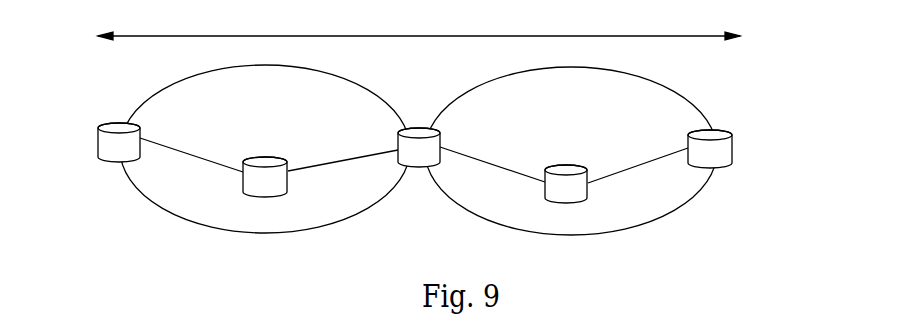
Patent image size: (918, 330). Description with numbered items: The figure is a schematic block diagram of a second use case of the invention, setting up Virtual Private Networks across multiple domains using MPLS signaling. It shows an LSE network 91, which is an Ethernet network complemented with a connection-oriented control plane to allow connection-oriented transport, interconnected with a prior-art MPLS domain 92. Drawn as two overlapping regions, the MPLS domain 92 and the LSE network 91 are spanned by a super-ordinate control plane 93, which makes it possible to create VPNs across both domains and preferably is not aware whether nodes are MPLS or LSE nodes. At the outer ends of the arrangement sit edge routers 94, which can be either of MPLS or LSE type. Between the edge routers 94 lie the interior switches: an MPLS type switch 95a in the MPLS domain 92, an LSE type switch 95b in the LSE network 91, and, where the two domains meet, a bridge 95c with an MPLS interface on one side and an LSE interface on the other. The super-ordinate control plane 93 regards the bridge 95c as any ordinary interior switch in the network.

The LSE network 91 is at (674, 209).
The MPLS domain 92 is at (344, 221).
The super-ordinate control plane 93 is at (610, 36).
The edge routers 94 is at (98, 148).
The MPLS type switch 95a is at (243, 180).
The LSE type switch 95b is at (569, 166).
The bridge 95c is at (409, 127).